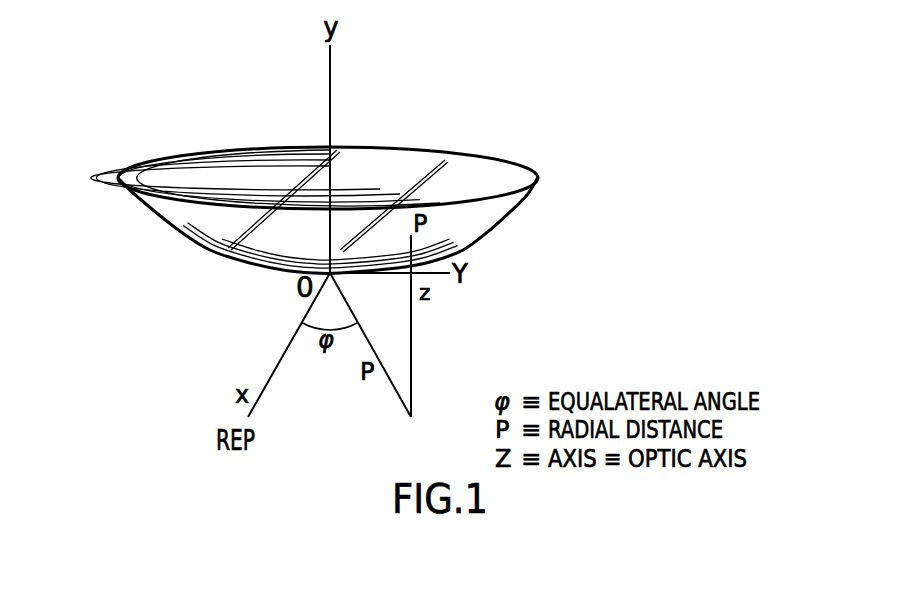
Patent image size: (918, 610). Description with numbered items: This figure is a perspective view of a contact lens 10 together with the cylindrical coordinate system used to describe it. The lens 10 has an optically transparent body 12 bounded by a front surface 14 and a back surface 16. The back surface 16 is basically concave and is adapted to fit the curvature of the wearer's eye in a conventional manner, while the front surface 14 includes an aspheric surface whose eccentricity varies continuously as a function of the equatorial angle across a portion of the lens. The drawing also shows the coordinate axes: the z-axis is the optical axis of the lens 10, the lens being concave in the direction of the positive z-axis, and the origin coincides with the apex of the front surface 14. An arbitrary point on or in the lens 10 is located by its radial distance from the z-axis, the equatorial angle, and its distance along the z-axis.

The contact lens 10 is at (543, 168).
The optically transparent body 12 is at (504, 192).
The front surface 14 is at (463, 222).
The back surface 16 is at (392, 173).